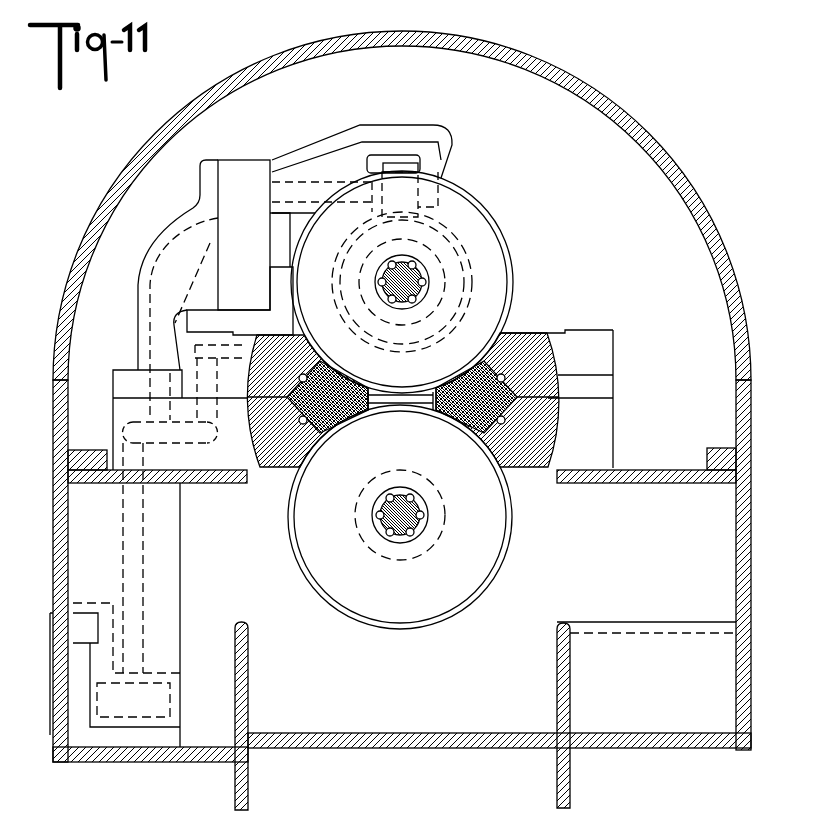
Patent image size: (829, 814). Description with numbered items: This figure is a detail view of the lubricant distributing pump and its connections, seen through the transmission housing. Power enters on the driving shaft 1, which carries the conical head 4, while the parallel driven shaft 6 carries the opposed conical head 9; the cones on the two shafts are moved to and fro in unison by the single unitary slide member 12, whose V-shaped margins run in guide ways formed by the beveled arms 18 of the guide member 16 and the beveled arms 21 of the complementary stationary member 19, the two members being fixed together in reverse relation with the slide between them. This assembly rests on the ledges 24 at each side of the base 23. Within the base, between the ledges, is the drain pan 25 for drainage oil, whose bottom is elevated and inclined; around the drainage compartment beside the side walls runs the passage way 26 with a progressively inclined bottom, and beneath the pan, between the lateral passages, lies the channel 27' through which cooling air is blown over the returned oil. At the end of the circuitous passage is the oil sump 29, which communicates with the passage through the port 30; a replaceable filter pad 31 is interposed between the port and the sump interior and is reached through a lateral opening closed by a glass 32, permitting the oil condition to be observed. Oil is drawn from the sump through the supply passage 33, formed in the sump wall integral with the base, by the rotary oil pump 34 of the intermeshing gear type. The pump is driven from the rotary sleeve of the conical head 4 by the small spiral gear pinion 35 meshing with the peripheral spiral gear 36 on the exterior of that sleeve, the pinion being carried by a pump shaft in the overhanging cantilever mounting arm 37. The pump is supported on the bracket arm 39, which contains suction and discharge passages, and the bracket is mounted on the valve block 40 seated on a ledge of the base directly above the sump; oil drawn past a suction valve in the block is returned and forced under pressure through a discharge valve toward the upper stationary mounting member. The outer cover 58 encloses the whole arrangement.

The housing cover 58 is at (583, 84).
The cantilever mounting arm 37 is at (332, 145).
The rotary oil pump 34 is at (238, 170).
The spiral gear pinion 35 is at (422, 157).
The peripheral spiral gear 36 is at (448, 240).
The conical head 4 is at (402, 282).
The driving shaft 1 is at (380, 300).
The bracket arm 39 is at (150, 251).
The beveled arms 18 is at (528, 333).
The guide member 16 is at (612, 345).
The slide member 12 is at (622, 372).
The complementary stationary member 19 is at (600, 430).
The ledges 24 is at (188, 470).
The valve block 40 is at (125, 407).
The beveled arms 21 is at (273, 470).
The driven shaft 6 is at (412, 492).
The conical head 9 is at (400, 517).
The base 23 is at (52, 552).
The supply passage 33 is at (137, 546).
The filter pad 31 is at (95, 672).
The oil sump 29 is at (113, 700).
The glass 32 is at (46, 734).
The passage way 26 is at (419, 716).
The port 30 is at (128, 757).
The drain pan 25 is at (428, 733).
The channel 27' is at (403, 770).